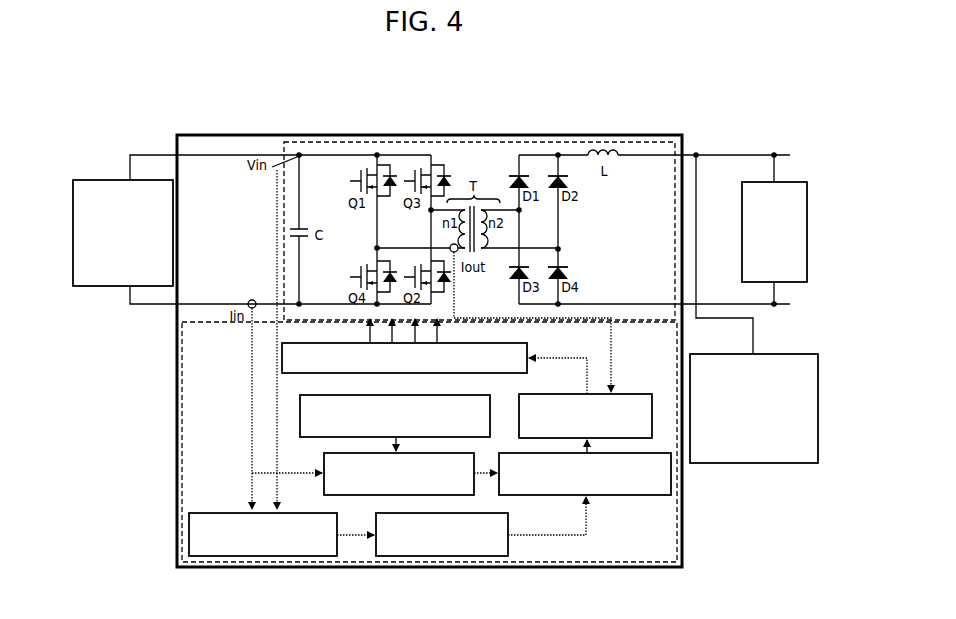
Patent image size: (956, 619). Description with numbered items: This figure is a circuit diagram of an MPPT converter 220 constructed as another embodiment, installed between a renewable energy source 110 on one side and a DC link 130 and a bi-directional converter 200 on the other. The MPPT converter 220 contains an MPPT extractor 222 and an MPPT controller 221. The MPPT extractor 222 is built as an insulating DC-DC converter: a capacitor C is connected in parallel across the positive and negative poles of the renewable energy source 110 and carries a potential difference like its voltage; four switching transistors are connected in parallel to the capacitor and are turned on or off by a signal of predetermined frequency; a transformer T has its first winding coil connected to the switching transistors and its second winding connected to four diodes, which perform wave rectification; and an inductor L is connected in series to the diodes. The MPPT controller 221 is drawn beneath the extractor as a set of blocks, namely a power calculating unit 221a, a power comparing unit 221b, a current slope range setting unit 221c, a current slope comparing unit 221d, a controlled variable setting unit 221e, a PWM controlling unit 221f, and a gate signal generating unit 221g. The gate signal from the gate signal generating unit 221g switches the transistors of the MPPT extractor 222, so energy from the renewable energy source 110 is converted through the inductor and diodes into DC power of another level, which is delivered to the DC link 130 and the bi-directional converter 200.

The renewable energy source 110 is at (114, 178).
The DC link 130 is at (742, 231).
The bi-directional converter 200 is at (753, 465).
The MPPT converter 220 is at (568, 134).
The MPPT controller 221 is at (520, 568).
The power calculating unit 221a is at (264, 557).
The power comparing unit 221b is at (444, 557).
The current slope range setting unit 221c is at (300, 413).
The current slope comparing unit 221d is at (324, 460).
The controlled variable setting unit 221e is at (612, 497).
The PWM controlling unit 221f is at (638, 393).
The gate signal generating unit 221g is at (528, 357).
The MPPT extractor 222 is at (442, 141).